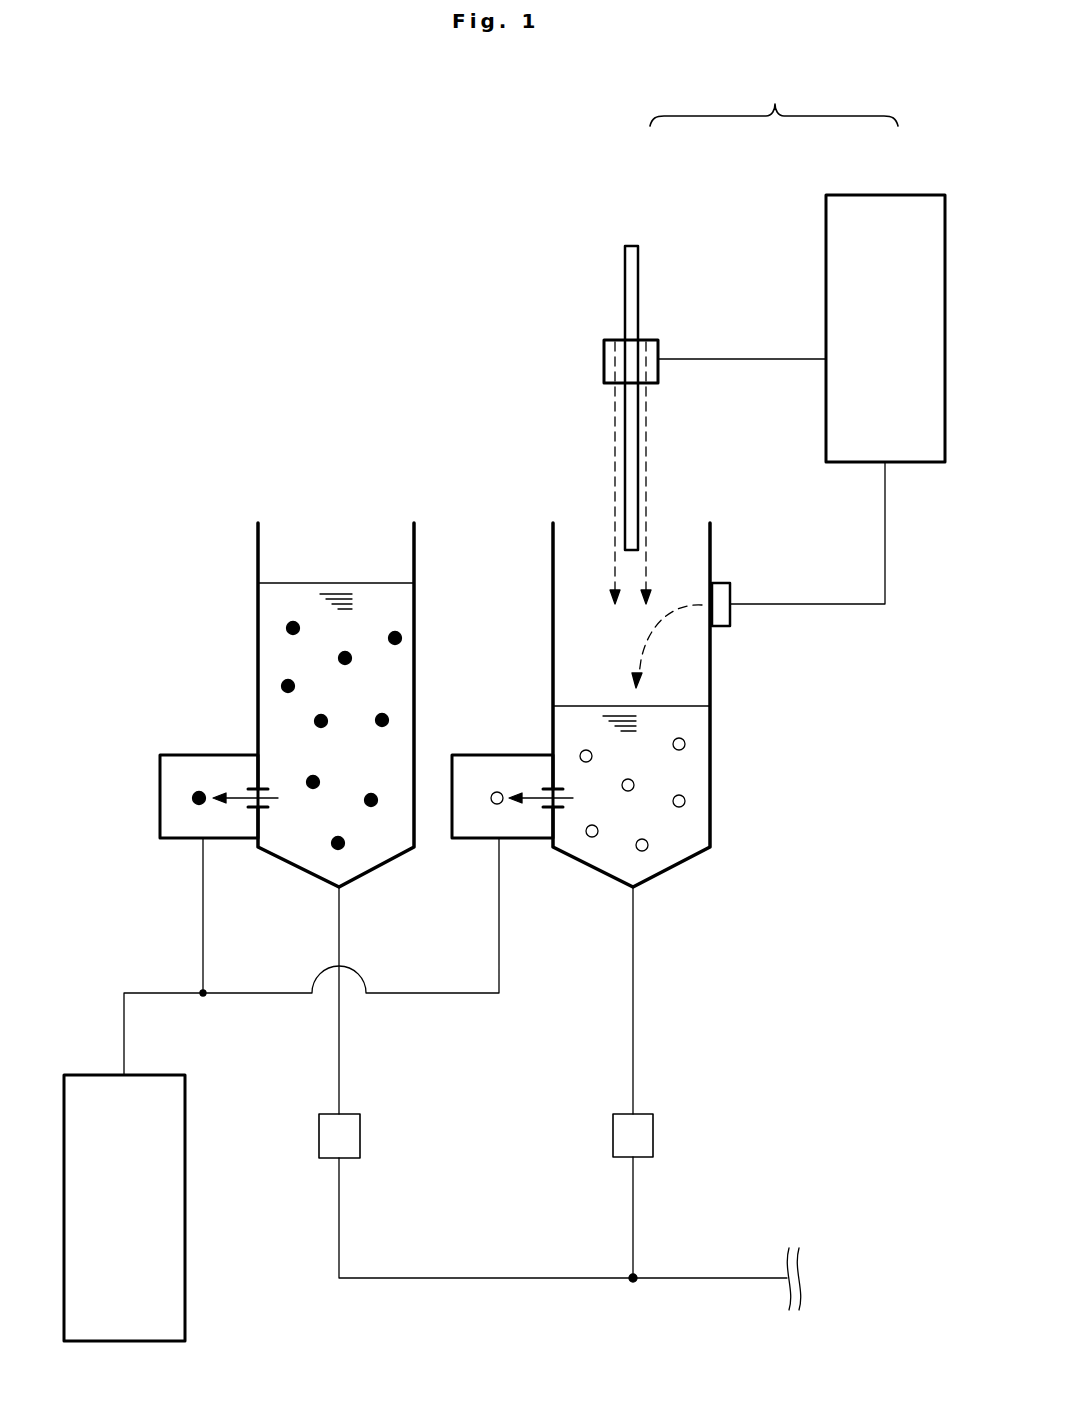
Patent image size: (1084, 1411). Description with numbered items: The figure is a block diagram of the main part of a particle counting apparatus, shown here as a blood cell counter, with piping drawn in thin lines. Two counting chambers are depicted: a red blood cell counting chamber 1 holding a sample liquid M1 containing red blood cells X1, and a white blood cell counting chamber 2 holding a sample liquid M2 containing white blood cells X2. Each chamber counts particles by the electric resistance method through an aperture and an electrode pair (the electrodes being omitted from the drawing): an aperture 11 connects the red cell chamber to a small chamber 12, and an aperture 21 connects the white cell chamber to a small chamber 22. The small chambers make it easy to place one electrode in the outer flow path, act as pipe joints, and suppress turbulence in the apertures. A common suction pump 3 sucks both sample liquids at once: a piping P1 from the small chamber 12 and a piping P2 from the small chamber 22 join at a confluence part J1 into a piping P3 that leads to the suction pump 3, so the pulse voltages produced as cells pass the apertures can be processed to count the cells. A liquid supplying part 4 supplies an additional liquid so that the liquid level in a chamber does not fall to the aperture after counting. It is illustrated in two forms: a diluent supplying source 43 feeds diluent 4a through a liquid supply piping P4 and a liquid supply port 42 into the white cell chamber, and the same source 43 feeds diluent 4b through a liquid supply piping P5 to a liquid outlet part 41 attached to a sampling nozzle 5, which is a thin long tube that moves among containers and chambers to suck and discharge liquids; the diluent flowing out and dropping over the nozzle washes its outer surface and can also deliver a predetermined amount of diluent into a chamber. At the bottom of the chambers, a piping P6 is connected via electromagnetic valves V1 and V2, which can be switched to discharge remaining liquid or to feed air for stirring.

The red blood cell counting chamber 1 is at (257, 625).
The white blood cell counting chamber 2 is at (552, 625).
The suction pump 3 is at (171, 1224).
The liquid supplying part 4 is at (774, 97).
The liquid outlet part 41 is at (653, 340).
The liquid supply port 42 is at (731, 588).
The diluent supplying source 43 is at (872, 237).
The diluent 4a is at (647, 644).
The diluent 4b is at (615, 448).
The sampling nozzle 5 is at (624, 308).
The aperture 11 is at (255, 788).
The small chamber 12 is at (189, 755).
The aperture 21 is at (547, 788).
The small chamber 22 is at (492, 755).
The sample liquid M1 is at (283, 592).
The sample liquid M2 is at (683, 826).
The red blood cell X1 is at (394, 634).
The white blood cell X2 is at (686, 744).
The piping P1 is at (202, 931).
The piping P2 is at (497, 931).
The piping P3 is at (120, 1052).
The liquid supply piping P4 is at (886, 500).
The liquid supply piping P5 is at (708, 360).
The piping P6 is at (489, 1280).
The confluence part J1 is at (203, 993).
The electromagnetic valve V1 is at (343, 1136).
The electromagnetic valve V2 is at (638, 1133).